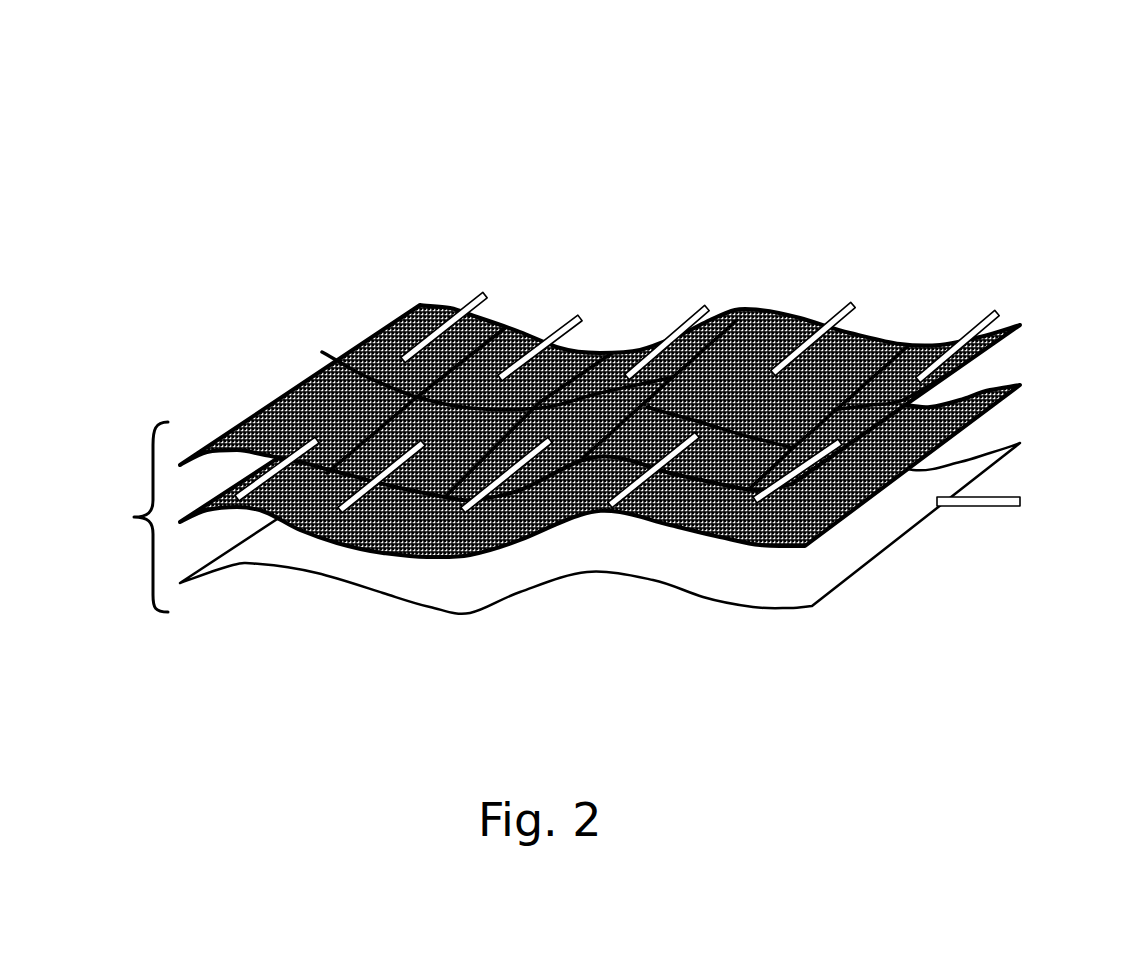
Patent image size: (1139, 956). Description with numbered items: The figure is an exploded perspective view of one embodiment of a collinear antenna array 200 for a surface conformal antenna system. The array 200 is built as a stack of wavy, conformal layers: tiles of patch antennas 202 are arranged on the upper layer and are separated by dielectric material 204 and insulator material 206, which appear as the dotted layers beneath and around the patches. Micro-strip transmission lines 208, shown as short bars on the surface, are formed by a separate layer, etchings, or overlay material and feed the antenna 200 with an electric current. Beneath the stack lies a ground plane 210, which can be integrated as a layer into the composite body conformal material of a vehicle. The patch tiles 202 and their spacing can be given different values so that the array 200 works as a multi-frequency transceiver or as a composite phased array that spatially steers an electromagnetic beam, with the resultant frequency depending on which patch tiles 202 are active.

The collinear antenna array 200 is at (882, 182).
The patch antennas 202 is at (833, 362).
The dielectric material 204 is at (863, 492).
The insulator material 206 is at (353, 360).
The micro-strip transmission lines 208 is at (482, 295).
The ground plane 210 is at (700, 597).